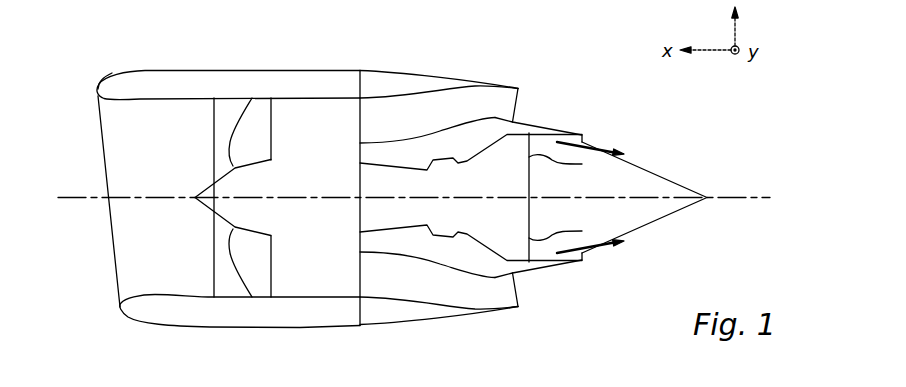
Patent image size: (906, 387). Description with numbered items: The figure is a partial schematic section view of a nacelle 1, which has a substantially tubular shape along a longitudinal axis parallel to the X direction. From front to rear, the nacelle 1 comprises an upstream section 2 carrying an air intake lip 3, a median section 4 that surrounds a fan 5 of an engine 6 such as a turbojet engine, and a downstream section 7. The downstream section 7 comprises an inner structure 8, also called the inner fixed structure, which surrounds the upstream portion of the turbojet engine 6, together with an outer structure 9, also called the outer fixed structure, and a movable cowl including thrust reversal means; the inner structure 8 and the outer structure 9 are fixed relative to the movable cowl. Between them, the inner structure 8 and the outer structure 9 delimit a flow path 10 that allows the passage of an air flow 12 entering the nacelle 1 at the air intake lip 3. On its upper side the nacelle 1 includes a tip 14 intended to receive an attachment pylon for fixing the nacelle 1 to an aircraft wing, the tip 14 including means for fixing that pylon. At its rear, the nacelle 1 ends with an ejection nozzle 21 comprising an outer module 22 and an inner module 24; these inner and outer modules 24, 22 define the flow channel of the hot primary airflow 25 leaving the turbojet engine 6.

The nacelle 1 is at (531, 59).
The upstream section 2 is at (145, 84).
The air intake lip 3 is at (100, 85).
The median section 4 is at (324, 77).
The fan 5 is at (313, 282).
The engine 6 is at (513, 157).
The downstream section 7 is at (445, 66).
The inner structure 8 is at (509, 107).
The outer structure 9 is at (460, 85).
The flow path 10 is at (373, 117).
The air flow 12 is at (137, 154).
The tip 14 is at (340, 70).
The ejection nozzle 21 is at (660, 156).
The outer module 22 is at (573, 133).
The inner module 24 is at (660, 220).
The primary airflow 25 is at (592, 141).